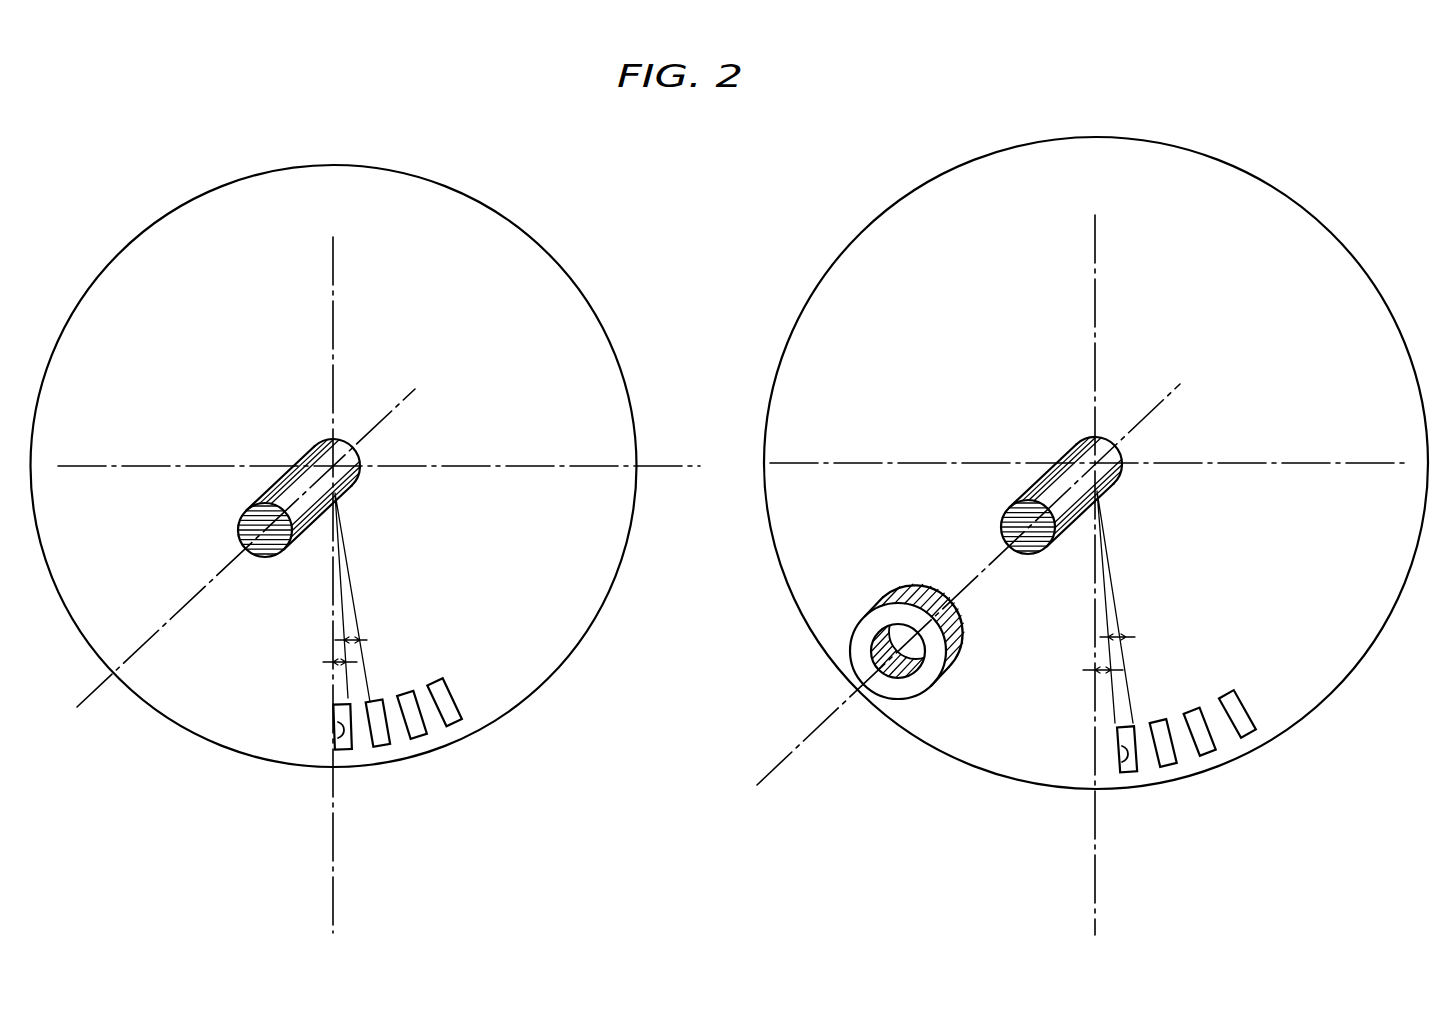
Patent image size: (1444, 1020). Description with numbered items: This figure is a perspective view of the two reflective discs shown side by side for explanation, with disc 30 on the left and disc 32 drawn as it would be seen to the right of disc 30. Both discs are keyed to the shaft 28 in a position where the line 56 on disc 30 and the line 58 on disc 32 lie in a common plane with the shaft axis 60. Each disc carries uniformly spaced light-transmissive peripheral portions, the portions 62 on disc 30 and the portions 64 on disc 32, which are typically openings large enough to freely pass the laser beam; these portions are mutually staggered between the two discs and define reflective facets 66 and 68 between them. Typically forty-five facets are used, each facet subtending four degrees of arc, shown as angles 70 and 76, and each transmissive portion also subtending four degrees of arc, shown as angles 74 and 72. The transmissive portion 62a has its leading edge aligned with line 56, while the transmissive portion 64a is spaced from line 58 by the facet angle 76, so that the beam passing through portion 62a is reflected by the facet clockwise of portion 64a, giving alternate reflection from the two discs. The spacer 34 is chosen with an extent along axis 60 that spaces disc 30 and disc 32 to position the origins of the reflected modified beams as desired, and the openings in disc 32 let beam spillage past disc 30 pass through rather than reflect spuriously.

The shaft 28 is at (270, 490).
The disc 30 is at (480, 222).
The disc 32 is at (893, 228).
The spacer 34 is at (890, 600).
The line 56 is at (331, 847).
The line 58 is at (1093, 860).
The shaft axis 60 is at (183, 607).
The light transmissive peripheral portions 62 is at (437, 686).
The transmissive portion 62a is at (340, 735).
The light transmissive peripheral portions 64 is at (1232, 690).
The transmissive portion 64a is at (1125, 758).
The reflective facets 66 is at (361, 742).
The reflective facets 68 is at (1147, 760).
The angle 70 is at (350, 636).
The angle 72 is at (1113, 632).
The angle 74 is at (338, 660).
The facet angle 76 is at (1100, 672).